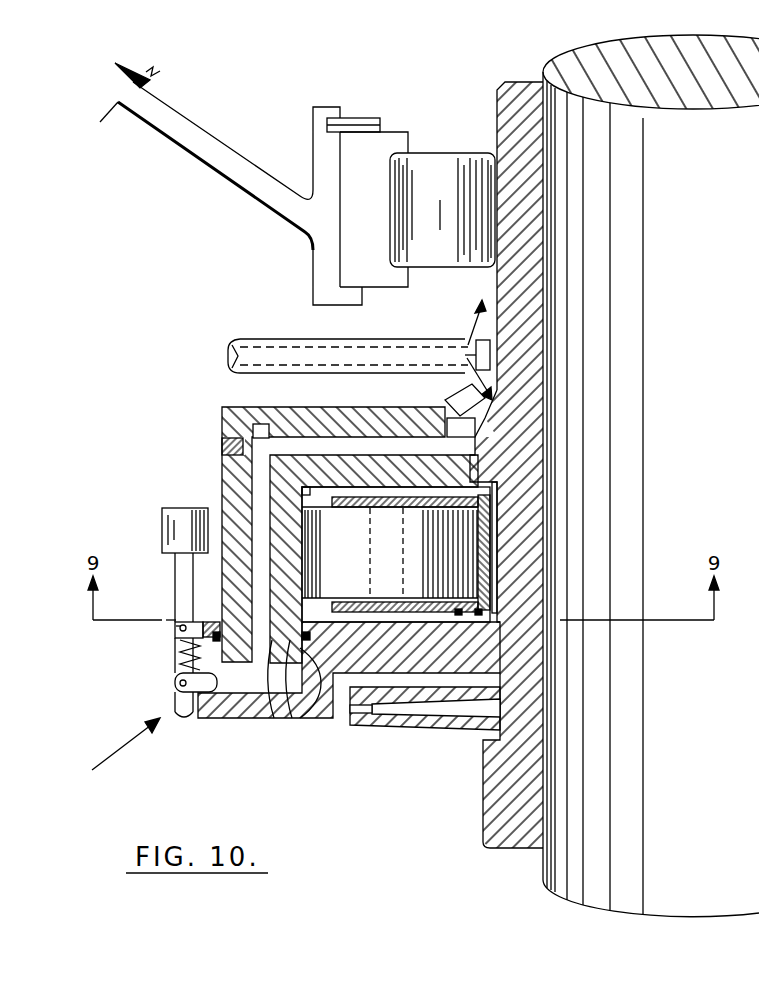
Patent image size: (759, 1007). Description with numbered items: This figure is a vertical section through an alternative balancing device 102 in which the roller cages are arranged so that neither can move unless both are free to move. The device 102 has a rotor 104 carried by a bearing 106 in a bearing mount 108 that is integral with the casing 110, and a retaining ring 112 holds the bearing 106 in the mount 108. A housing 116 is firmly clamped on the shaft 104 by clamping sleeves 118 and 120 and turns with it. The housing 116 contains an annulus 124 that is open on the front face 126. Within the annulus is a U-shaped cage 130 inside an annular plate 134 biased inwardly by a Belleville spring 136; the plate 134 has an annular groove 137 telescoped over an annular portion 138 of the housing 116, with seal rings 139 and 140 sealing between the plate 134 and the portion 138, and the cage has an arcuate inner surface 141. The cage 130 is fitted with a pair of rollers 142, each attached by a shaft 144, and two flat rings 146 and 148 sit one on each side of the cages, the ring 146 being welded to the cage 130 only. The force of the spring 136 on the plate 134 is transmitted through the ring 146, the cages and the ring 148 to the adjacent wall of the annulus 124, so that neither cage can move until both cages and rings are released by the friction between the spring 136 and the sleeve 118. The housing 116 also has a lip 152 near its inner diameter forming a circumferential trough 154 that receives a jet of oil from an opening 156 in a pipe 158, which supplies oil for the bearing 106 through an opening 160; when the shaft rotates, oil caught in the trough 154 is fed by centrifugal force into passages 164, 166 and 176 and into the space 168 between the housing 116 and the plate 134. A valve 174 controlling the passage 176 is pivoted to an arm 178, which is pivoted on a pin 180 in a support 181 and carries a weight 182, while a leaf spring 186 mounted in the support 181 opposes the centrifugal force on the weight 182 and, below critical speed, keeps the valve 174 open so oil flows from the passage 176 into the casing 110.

The balancing device 102 is at (96, 757).
The rotor 104 is at (670, 250).
The bearing 106 is at (440, 152).
The bearing mount 108 is at (328, 106).
The casing 110 is at (192, 120).
The retaining ring 112 is at (364, 117).
The housing 116 is at (511, 619).
The clamping sleeve 118 is at (482, 794).
The clamping sleeve 120 is at (530, 197).
The annulus 124 is at (396, 554).
The front face 126 is at (491, 762).
The cage 130 is at (352, 480).
The annular plate 134 is at (412, 725).
The Belleville spring 136 is at (410, 727).
The annular groove 137 is at (301, 662).
The annular portion 138 is at (286, 655).
The seal ring 139 is at (225, 636).
The seal ring 140 is at (349, 699).
The arcuate inner surface 141 is at (496, 546).
The roller 142 is at (322, 572).
The shaft 144 is at (418, 553).
The flat ring 146 is at (470, 620).
The flat ring 148 is at (492, 486).
The lip 152 is at (440, 400).
The circumferential trough 154 is at (488, 416).
The opening 156 is at (493, 362).
The pipe 158 is at (258, 348).
The opening 160 is at (490, 335).
The passage 164 is at (315, 438).
The passage 166 is at (238, 478).
The space 168 is at (205, 631).
The valve 174 is at (185, 688).
The passage 176 is at (236, 702).
The arm 178 is at (172, 578).
The pin 180 is at (180, 626).
The support 181 is at (175, 629).
The weight 182 is at (184, 514).
The leaf spring 186 is at (198, 661).